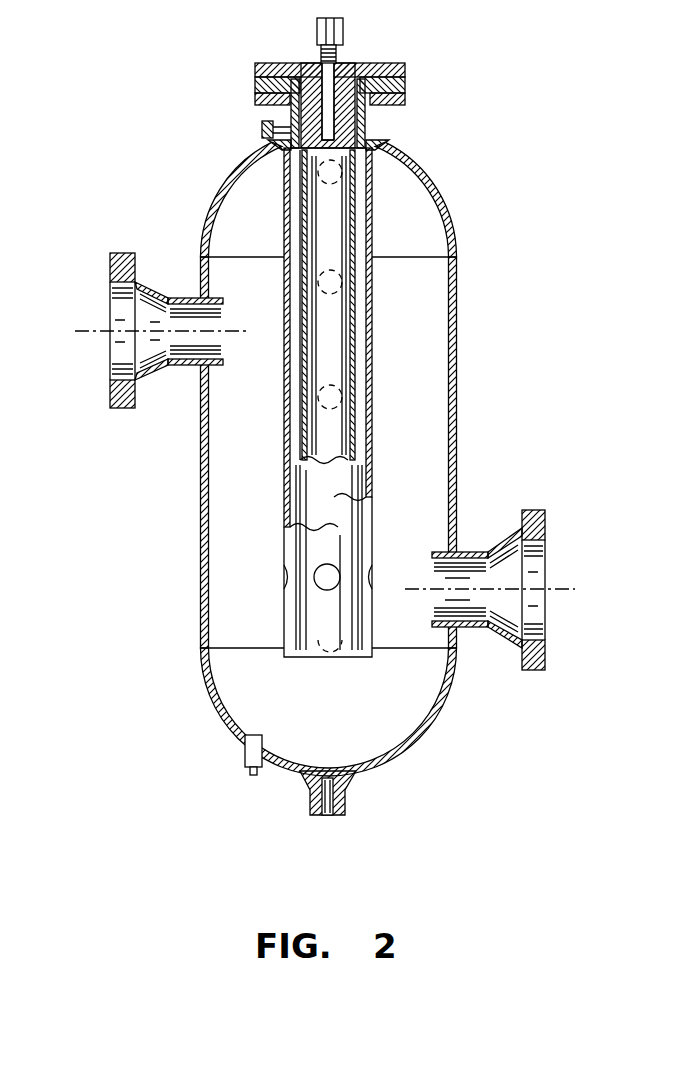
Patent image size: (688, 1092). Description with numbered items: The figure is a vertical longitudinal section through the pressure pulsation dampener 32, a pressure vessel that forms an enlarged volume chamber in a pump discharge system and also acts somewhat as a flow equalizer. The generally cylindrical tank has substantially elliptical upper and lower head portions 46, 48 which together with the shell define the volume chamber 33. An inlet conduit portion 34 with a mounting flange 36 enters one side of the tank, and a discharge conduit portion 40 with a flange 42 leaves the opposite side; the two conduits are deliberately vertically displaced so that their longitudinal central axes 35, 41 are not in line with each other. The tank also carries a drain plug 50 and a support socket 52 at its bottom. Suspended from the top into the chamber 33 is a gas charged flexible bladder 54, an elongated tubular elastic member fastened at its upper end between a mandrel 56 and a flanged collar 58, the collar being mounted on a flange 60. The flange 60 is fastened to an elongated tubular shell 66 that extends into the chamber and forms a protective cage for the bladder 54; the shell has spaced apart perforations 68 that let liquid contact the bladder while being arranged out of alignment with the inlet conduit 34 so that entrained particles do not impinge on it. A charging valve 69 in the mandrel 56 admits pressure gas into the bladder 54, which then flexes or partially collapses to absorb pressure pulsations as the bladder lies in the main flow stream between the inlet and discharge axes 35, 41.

The pressure pulsation dampener 32 is at (428, 175).
The volume chamber 33 is at (416, 395).
The inlet conduit portion 34 is at (152, 351).
The longitudinal central axis of inlet conduit 35 is at (130, 320).
The mounting flange 36 is at (122, 410).
The discharge conduit portion 40 is at (493, 574).
The longitudinal central axis of discharge conduit 41 is at (500, 590).
The flange 42 is at (533, 512).
The upper head portion 46 is at (402, 162).
The lower head portion 48 is at (420, 742).
The drain plug 50 is at (245, 755).
The support socket 52 is at (346, 802).
The gas charged flexible bladder 54 is at (335, 402).
The mandrel 56 is at (262, 99).
The flanged collar 58 is at (368, 113).
The flange 60 is at (262, 108).
The tubular shell 66 is at (284, 206).
The perforations 68 is at (372, 228).
The charging valve 69 is at (344, 30).